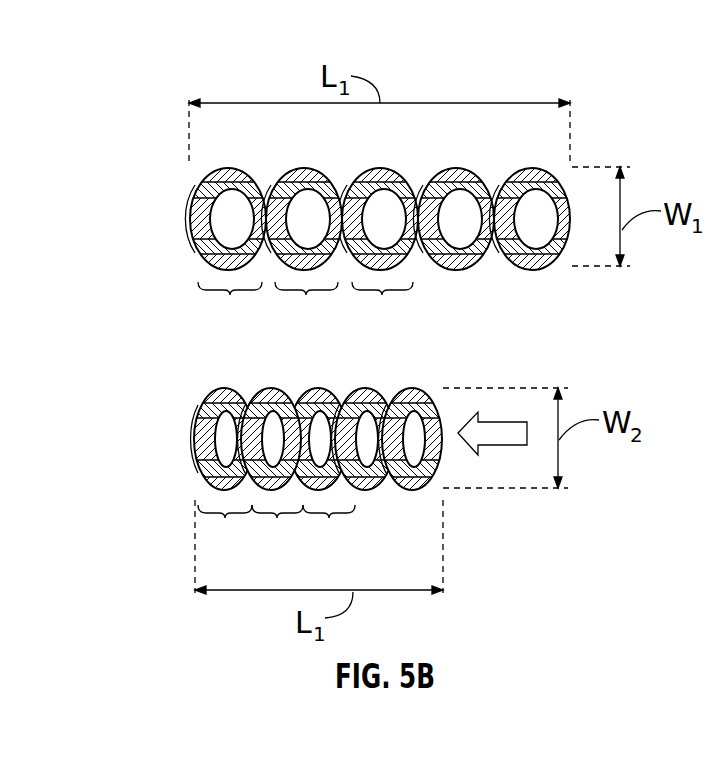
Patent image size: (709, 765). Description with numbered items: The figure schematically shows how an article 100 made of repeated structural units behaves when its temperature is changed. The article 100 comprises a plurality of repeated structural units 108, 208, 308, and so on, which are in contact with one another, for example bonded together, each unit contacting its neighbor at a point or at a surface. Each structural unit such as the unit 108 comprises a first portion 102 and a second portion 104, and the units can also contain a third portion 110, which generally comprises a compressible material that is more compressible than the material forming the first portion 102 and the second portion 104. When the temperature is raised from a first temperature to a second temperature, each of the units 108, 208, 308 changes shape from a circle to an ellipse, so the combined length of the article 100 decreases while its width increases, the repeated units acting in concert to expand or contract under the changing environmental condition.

The article 100 is at (558, 45).
The first portion 102 is at (314, 167).
The second portion 104 is at (191, 231).
The repeated structural unit 108 is at (230, 416).
The repeated structural unit 208 is at (295, 416).
The repeated structural unit 308 is at (358, 416).
The third portion 110 is at (534, 229).